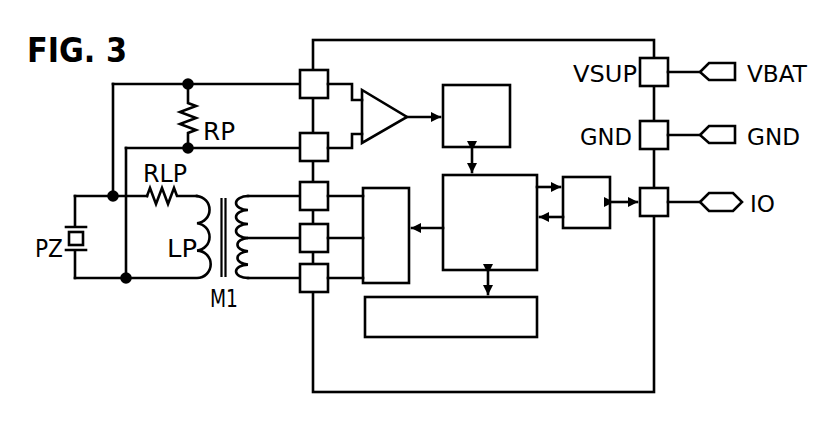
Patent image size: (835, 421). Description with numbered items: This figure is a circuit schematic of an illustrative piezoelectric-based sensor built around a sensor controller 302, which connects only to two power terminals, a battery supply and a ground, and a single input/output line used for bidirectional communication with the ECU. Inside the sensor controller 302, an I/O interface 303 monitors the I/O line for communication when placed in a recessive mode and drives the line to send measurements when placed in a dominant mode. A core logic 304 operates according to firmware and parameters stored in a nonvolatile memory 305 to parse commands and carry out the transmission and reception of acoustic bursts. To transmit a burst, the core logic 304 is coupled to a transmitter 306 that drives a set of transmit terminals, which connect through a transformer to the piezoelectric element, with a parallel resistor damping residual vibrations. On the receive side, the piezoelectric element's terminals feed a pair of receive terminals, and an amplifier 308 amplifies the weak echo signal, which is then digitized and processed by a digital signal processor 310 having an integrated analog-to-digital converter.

The sensor controller 302 is at (608, 38).
The I/O interface 303 is at (596, 229).
The core logic 304 is at (538, 241).
The nonvolatile memory 305 is at (490, 339).
The transmitter 306 is at (381, 187).
The amplifier 308 is at (382, 96).
The digital signal processor (DSP) 310 is at (511, 95).